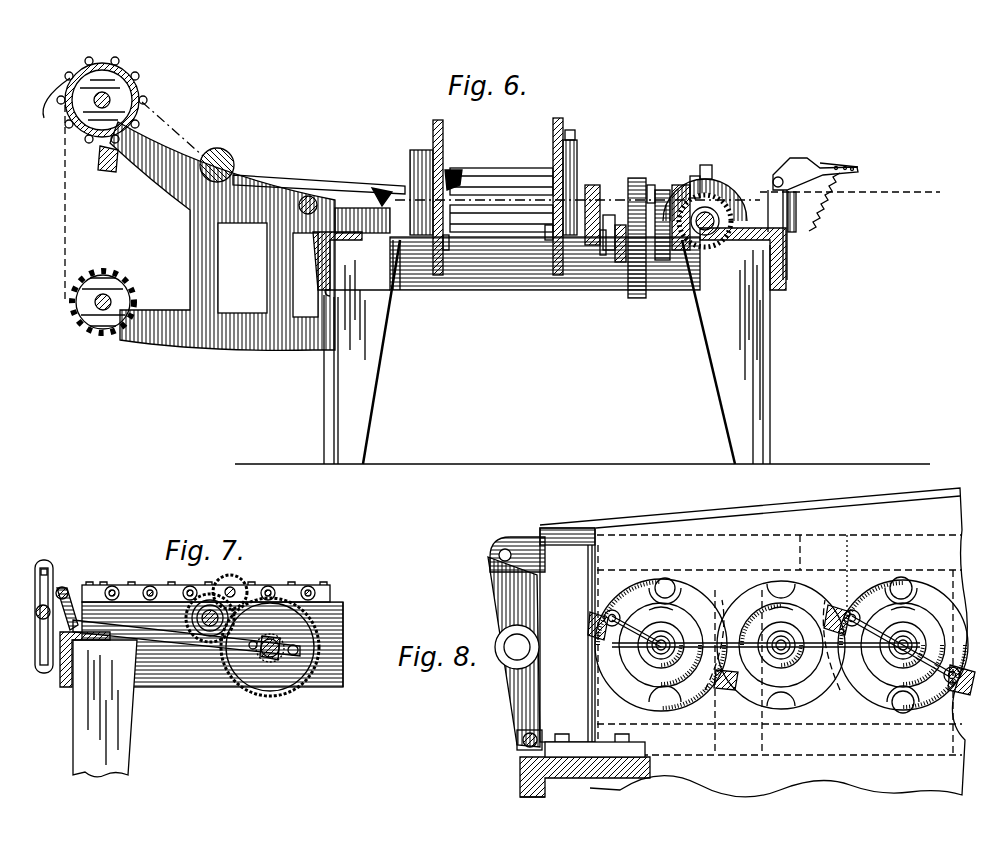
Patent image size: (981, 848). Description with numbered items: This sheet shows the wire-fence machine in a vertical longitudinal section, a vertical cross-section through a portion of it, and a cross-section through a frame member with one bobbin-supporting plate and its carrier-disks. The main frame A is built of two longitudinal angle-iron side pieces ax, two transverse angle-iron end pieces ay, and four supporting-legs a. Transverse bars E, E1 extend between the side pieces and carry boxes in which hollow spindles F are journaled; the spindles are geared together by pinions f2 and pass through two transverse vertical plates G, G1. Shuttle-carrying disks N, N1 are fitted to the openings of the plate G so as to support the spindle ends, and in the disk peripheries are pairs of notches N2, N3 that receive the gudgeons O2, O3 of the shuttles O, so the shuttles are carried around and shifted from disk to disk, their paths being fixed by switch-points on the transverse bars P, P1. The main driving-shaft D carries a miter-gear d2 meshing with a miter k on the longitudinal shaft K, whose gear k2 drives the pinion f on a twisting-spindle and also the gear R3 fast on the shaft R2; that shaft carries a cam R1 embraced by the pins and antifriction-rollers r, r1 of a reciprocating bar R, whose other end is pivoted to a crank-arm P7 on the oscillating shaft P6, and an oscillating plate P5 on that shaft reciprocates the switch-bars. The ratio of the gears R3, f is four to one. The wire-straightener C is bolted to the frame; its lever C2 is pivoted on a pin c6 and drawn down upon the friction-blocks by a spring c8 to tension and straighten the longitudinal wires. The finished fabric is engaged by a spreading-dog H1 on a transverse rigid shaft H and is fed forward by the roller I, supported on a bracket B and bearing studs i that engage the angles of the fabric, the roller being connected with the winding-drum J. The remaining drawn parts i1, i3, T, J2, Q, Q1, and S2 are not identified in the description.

In FIG. 6, the feed roller I is at (140, 94).
In FIG. 6, the pawl i1 is at (96, 96).
In FIG. 6, the studs i is at (66, 112).
In FIG. 6, the holding pawl i3 is at (112, 172).
In FIG. 6, the roller T is at (232, 157).
In FIG. 6, the winding-drum J is at (128, 290).
In FIG. 6, the pulley shaft J2 is at (100, 308).
In FIG. 6, the transverse rigid shaft H is at (311, 195).
In FIG. 6, the spreading-dog H1 is at (372, 186).
In FIG. 6, the bracket B is at (222, 236).
In FIG. 6, the main frame A is at (500, 268).
In FIG. 7, the main frame A is at (170, 690).
In FIG. 8, the main frame A is at (590, 778).
In FIG. 6, the supporting-legs a is at (547, 352).
In FIG. 7, the supporting-legs a is at (105, 708).
In FIG. 6, the transverse angle-iron end pieces ay is at (330, 268).
In FIG. 7, the transverse angle-iron end pieces ay is at (343, 668).
In FIG. 8, the transverse angle-iron end pieces ay is at (522, 788).
In FIG. 6, the longitudinal angle-iron side pieces ax is at (406, 280).
In FIG. 7, the longitudinal angle-iron side pieces ax is at (62, 687).
In FIG. 6, the housing Q is at (420, 152).
In FIG. 8, the housing Q is at (567, 635).
In FIG. 6, the transverse vertical plate G is at (433, 131).
In FIG. 8, the transverse vertical plate G is at (753, 642).
In FIG. 6, the transverse vertical plate G1 is at (570, 132).
In FIG. 6, the hollow spindle F is at (500, 170).
In FIG. 6, the shuttle O is at (487, 205).
In FIG. 6, the transverse bar P is at (455, 165).
In FIG. 8, the transverse bar P is at (533, 540).
In FIG. 6, the transverse bar P1 is at (446, 250).
In FIG. 8, the transverse bar P1 is at (520, 745).
In FIG. 6, the transverse bar E1 is at (592, 185).
In FIG. 7, the transverse bar E1 is at (152, 588).
In FIG. 8, the transverse bar E1 is at (790, 638).
In FIG. 6, the transverse bar E is at (680, 185).
In FIG. 7, the transverse bar E is at (114, 588).
In FIG. 8, the transverse bar E is at (668, 640).
In FIG. 6, the longitudinal shaft K is at (608, 250).
In FIG. 7, the longitudinal shaft K is at (210, 630).
In FIG. 6, the pinions f2 is at (602, 255).
In FIG. 6, the shaft R2 is at (618, 262).
In FIG. 7, the shaft R2 is at (270, 657).
In FIG. 6, the gear R3 is at (636, 298).
In FIG. 7, the gear R3 is at (290, 680).
In FIG. 6, the gear Q1 is at (660, 190).
In FIG. 6, the pinion f is at (652, 184).
In FIG. 7, the pinion f is at (244, 588).
In FIG. 6, the miter k is at (695, 176).
In FIG. 6, the main driving-shaft D is at (712, 208).
In FIG. 6, the pin c6 is at (773, 175).
In FIG. 6, the wire-straightener C is at (795, 166).
In FIG. 6, the lever C2 is at (850, 163).
In FIG. 6, the spring c8 is at (818, 213).
In FIG. 6, the miter-gear d2 is at (792, 232).
In FIG. 7, the gear k2 is at (218, 628).
In FIG. 7, the cam R1 is at (305, 680).
In FIG. 7, the reciprocating bar R is at (190, 642).
In FIG. 7, the pin and antifriction-roller r is at (254, 640).
In FIG. 7, the pin and antifriction-roller r1 is at (298, 647).
In FIG. 7, the oscillating shaft P6 is at (64, 580).
In FIG. 8, the oscillating shaft P6 is at (515, 652).
In FIG. 7, the crank-arm P7 is at (72, 600).
In FIG. 8, the oscillating plate P5 is at (492, 598).
In FIG. 8, the shuttle-carrying disk N is at (781, 645).
In FIG. 8, the shuttle-carrying disk N1 is at (781, 649).
In FIG. 8, the notch N2 is at (688, 588).
In FIG. 8, the notch N3 is at (592, 636).
In FIG. 8, the gudgeon O2 is at (670, 586).
In FIG. 8, the gudgeon O3 is at (614, 610).
In FIG. 8, the segment S2 is at (720, 608).